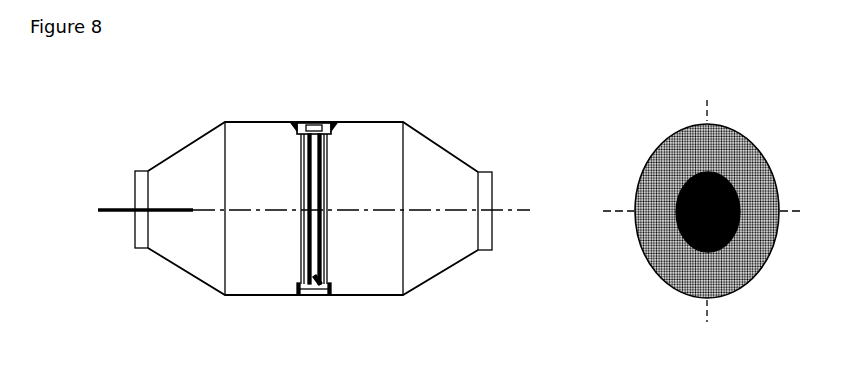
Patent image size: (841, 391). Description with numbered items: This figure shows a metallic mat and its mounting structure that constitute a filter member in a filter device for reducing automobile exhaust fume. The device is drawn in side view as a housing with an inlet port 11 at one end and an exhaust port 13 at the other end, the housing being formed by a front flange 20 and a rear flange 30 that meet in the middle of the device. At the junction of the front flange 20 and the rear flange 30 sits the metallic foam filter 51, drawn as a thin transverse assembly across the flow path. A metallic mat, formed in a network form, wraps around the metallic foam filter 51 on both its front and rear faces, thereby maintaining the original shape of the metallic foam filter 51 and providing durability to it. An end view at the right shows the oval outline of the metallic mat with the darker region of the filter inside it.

The inlet port 11 is at (140, 232).
The exhaust port 13 is at (485, 232).
The front flange 20 is at (292, 122).
The rear flange 30 is at (340, 123).
The metallic foam filter 51 is at (319, 285).